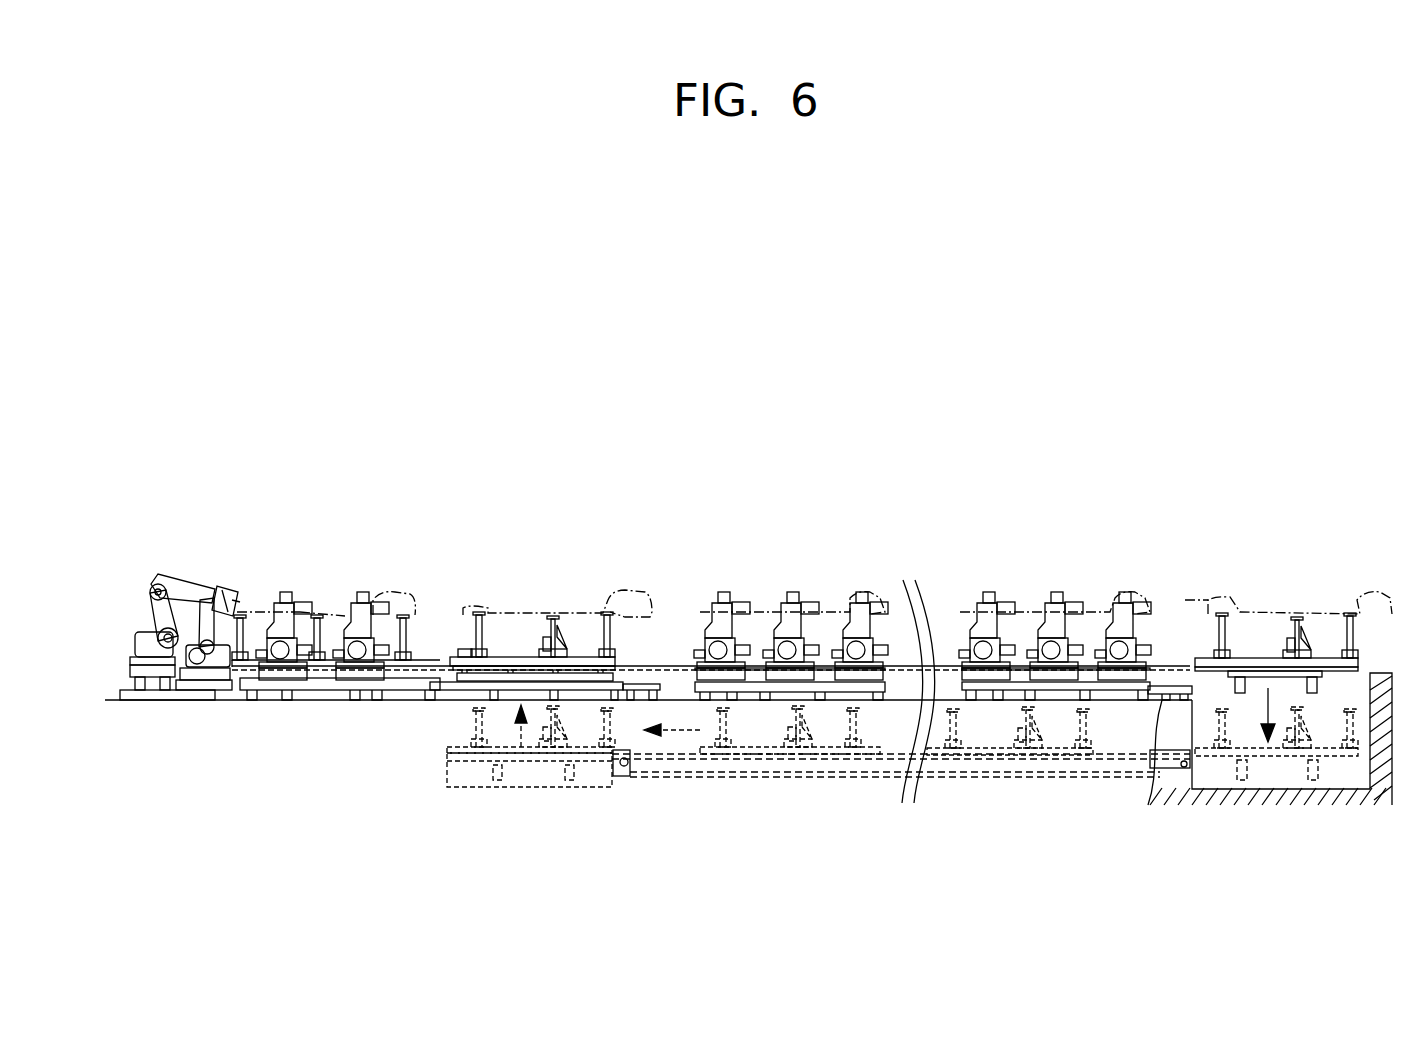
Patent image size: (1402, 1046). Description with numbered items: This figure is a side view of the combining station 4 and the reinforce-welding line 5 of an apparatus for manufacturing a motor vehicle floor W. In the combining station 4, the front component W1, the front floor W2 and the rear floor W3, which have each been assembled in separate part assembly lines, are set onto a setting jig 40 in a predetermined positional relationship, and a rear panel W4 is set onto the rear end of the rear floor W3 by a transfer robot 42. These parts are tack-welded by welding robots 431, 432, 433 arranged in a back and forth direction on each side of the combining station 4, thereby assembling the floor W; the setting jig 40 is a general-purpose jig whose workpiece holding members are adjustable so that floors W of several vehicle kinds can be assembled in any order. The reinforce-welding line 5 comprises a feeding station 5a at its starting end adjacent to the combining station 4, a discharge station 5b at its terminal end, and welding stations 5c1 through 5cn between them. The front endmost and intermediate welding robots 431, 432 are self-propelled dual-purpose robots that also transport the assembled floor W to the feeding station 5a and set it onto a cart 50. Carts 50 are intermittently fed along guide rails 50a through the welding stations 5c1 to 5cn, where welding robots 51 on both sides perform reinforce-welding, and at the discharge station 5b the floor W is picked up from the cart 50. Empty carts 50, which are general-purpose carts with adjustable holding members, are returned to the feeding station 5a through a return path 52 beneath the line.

The combining station 4 is at (310, 455).
The reinforce-welding line 5 is at (1290, 372).
The feeding station 5a is at (563, 456).
The welding station 5c1 is at (794, 456).
The welding station 5cn is at (1055, 456).
The discharge station 5b is at (1257, 456).
The setting jig 40 is at (315, 700).
The transfer robot 42 is at (152, 680).
The welding robot 431 is at (357, 665).
The welding robot 432 is at (280, 662).
The welding robot 433 is at (206, 680).
The cart 50 is at (520, 652).
The guide rails 50a is at (943, 660).
The welding robot 51 is at (726, 588).
The return path 52 is at (808, 776).
The floor W is at (578, 600).
The front component W1 is at (394, 590).
The front floor W2 is at (329, 592).
The rear floor W3 is at (255, 590).
The rear panel W4 is at (1210, 602).